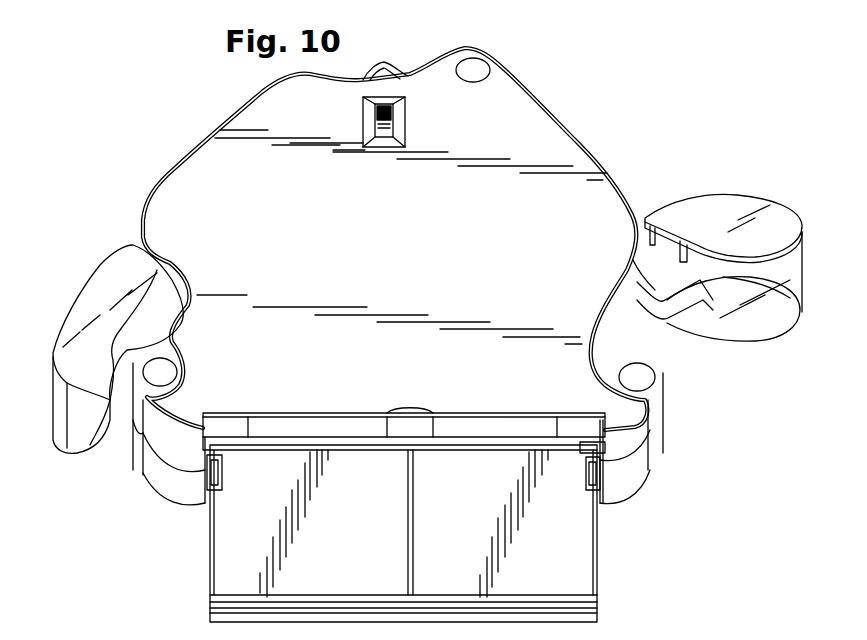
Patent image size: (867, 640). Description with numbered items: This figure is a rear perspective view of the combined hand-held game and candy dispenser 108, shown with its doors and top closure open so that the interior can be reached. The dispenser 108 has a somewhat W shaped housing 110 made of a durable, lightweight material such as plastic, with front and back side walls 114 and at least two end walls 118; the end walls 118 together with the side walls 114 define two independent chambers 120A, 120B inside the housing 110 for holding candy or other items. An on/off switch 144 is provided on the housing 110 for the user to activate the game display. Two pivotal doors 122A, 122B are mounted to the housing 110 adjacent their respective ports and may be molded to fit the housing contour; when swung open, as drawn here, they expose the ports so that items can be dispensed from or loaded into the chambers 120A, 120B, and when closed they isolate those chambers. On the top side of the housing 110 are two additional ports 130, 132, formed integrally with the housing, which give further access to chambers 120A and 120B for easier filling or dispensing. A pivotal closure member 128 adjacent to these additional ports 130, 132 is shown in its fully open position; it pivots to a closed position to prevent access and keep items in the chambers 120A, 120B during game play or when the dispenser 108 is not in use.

The game and candy dispenser 108 is at (553, 70).
The housing 110 is at (600, 87).
The front and back side walls 114 is at (208, 180).
The end walls 118 is at (230, 116).
The chamber 120A is at (158, 338).
The chamber 120B is at (644, 344).
The pivotal door 122A is at (100, 268).
The pivotal door 122B is at (752, 342).
The pivotal closure member 128 is at (600, 583).
The additional port 130 is at (560, 450).
The additional port 132 is at (273, 440).
The on/off switch 144 is at (400, 112).